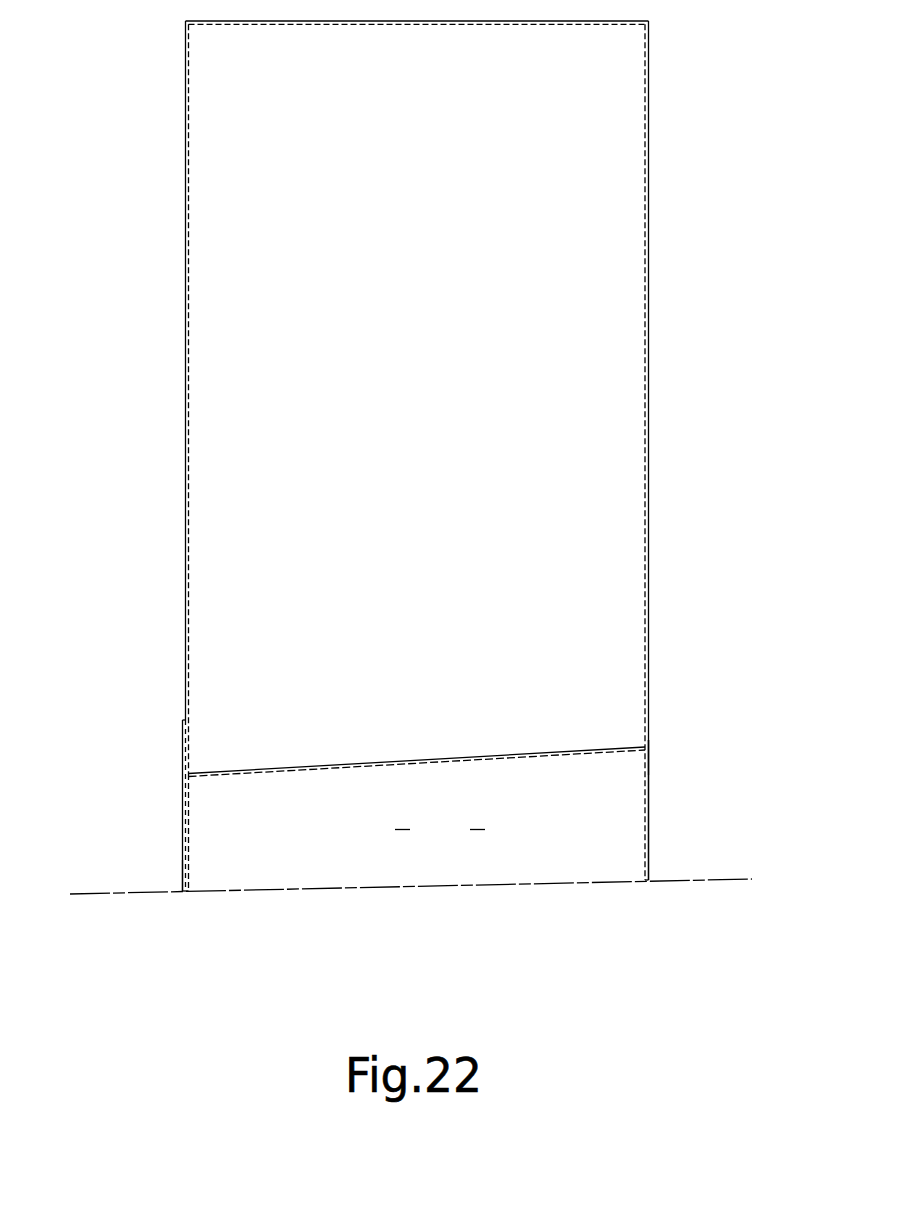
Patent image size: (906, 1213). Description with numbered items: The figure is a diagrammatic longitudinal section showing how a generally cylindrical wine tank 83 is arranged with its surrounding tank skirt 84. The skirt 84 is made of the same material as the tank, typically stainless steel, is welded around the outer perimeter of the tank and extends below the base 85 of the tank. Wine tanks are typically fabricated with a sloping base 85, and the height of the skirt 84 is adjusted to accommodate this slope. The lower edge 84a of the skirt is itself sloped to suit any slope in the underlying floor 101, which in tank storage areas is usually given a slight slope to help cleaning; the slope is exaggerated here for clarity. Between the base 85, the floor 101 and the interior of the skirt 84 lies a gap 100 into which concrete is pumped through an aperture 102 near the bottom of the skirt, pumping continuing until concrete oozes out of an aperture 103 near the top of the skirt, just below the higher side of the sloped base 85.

The wine tank 83 is at (349, 450).
The skirt 84 is at (117, 801).
The lower edge of the skirt 84a is at (676, 872).
The base 85 is at (417, 711).
The gap 100 is at (440, 829).
The floor 101 is at (411, 941).
The aperture 102 is at (112, 870).
The aperture 103 is at (724, 751).